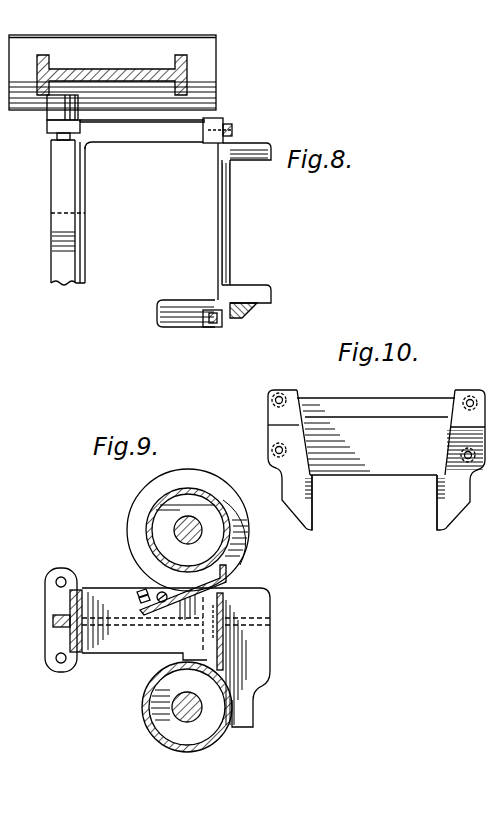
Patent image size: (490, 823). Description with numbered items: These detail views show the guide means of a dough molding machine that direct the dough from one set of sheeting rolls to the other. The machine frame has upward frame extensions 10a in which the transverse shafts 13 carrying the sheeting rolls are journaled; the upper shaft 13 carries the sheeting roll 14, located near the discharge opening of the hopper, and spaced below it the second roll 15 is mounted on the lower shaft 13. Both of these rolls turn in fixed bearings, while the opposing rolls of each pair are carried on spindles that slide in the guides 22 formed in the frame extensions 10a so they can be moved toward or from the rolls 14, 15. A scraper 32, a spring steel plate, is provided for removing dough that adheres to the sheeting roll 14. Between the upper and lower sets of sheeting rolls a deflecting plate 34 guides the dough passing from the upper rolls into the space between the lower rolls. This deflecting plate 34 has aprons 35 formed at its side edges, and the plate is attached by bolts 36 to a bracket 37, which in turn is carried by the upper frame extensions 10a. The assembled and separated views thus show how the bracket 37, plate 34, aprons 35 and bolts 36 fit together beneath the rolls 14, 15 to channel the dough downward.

In FIG. 8, the upward extension of the main frame 10a is at (128, 66).
In FIG. 8, the guide 22 is at (210, 53).
In FIG. 9, the transverse shaft 13 is at (148, 523).
In FIG. 9, the sheeting roll 14 is at (173, 531).
In FIG. 9, the second roll 15 is at (143, 702).
In FIG. 9, the scraper 32 is at (241, 566).
In FIG. 8, the deflecting plate 34 is at (250, 294).
In FIG. 9, the deflecting plate 34 is at (222, 647).
In FIG. 10, the deflecting plate 34 is at (376, 436).
In FIG. 8, the apron 35 is at (231, 221).
In FIG. 9, the apron 35 is at (263, 668).
In FIG. 10, the apron 35 is at (313, 512).
In FIG. 8, the bolt 36 is at (232, 130).
In FIG. 8, the bracket 37 is at (160, 146).
In FIG. 9, the bracket 37 is at (126, 645).